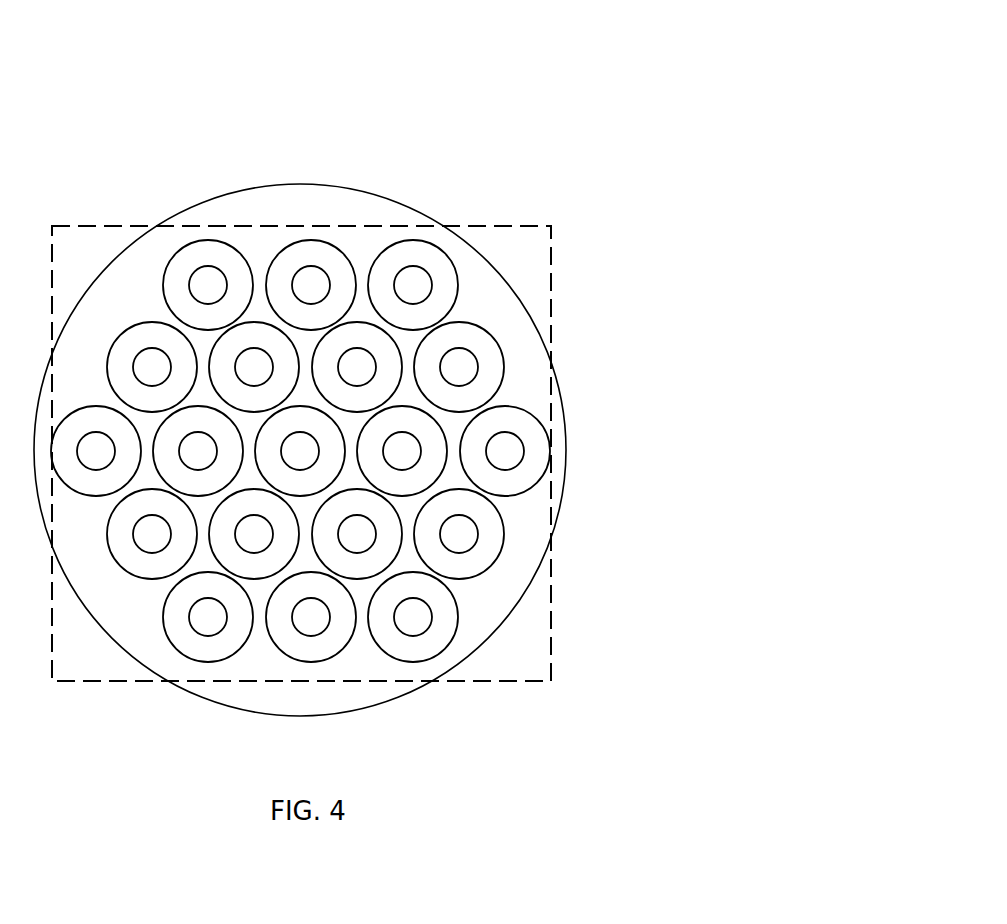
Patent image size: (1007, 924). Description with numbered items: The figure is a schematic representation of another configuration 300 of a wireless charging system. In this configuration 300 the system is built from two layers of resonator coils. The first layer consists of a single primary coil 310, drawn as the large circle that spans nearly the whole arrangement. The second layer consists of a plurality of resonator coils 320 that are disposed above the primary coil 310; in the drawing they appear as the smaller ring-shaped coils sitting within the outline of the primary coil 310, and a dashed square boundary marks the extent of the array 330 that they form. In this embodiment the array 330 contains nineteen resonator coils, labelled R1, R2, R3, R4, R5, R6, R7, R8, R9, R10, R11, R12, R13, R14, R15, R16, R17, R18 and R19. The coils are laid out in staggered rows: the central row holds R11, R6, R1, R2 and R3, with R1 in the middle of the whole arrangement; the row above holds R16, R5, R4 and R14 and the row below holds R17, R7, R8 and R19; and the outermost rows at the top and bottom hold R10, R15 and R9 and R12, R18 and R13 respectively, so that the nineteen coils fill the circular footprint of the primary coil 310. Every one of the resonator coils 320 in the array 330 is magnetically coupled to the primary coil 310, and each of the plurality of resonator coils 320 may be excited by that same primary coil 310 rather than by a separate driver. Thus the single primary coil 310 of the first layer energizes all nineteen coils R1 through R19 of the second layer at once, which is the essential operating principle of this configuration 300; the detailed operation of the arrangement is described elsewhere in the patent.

The configuration 300 is at (545, 76).
The primary coil 310 is at (566, 450).
The resonator coils 320 is at (240, 250).
The array 330 is at (552, 250).
The resonator coil R1 is at (300, 451).
The resonator coil R2 is at (402, 451).
The resonator coil R3 is at (505, 451).
The resonator coil R4 is at (383, 332).
The resonator coil R5 is at (228, 332).
The resonator coil R6 is at (198, 451).
The resonator coil R7 is at (241, 547).
The resonator coil R8 is at (370, 547).
The resonator coil R9 is at (438, 252).
The resonator coil R10 is at (182, 252).
The resonator coil R11 is at (96, 451).
The resonator coil R12 is at (180, 650).
The resonator coil R13 is at (440, 652).
The resonator coil R14 is at (495, 343).
The resonator coil R15 is at (311, 240).
The resonator coil R16 is at (113, 345).
The resonator coil R17 is at (115, 557).
The resonator coil R18 is at (311, 662).
The resonator coil R19 is at (493, 558).